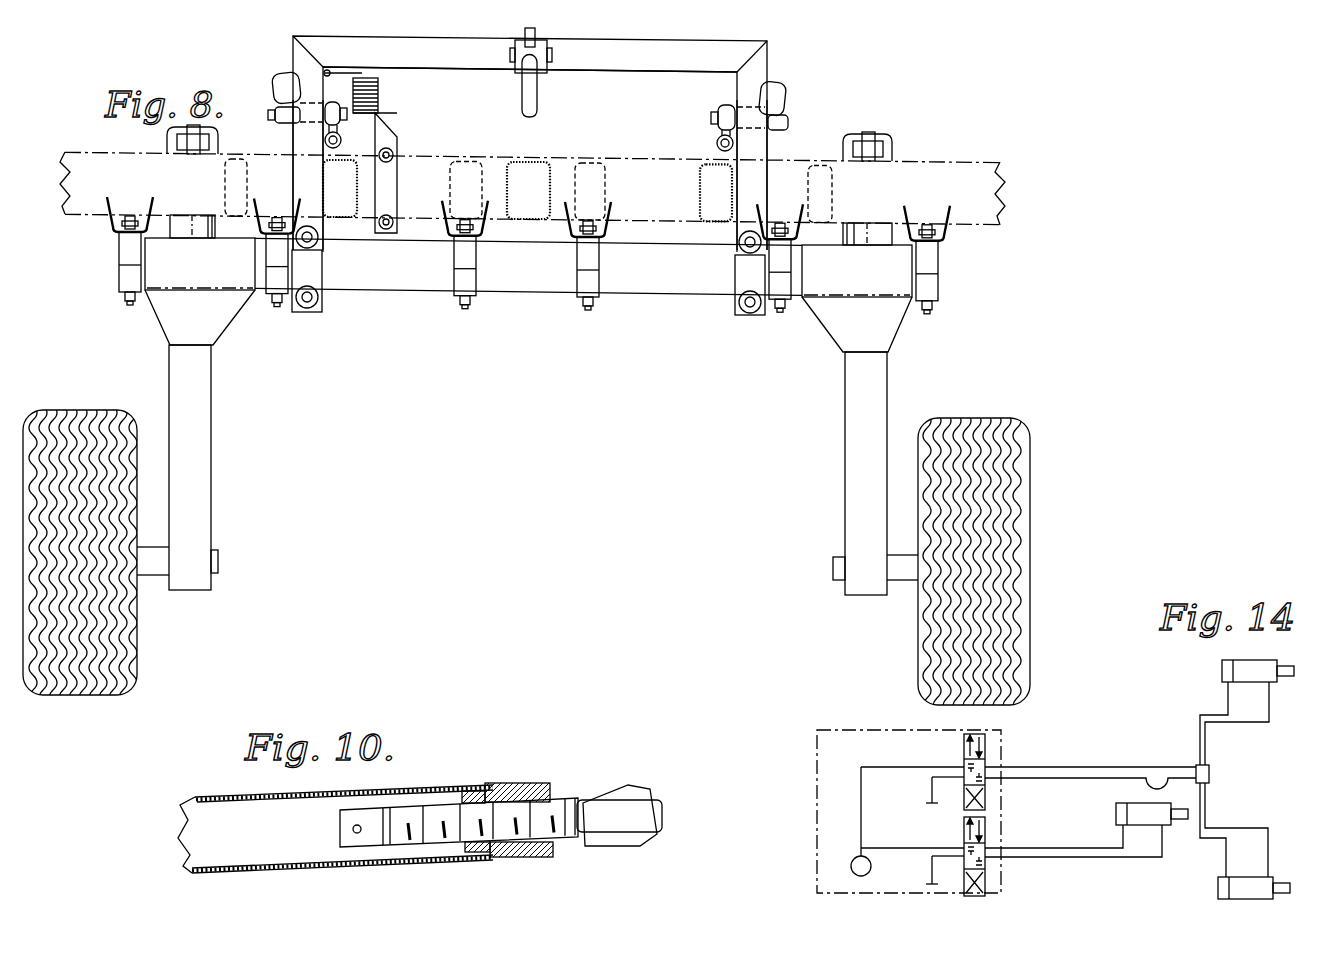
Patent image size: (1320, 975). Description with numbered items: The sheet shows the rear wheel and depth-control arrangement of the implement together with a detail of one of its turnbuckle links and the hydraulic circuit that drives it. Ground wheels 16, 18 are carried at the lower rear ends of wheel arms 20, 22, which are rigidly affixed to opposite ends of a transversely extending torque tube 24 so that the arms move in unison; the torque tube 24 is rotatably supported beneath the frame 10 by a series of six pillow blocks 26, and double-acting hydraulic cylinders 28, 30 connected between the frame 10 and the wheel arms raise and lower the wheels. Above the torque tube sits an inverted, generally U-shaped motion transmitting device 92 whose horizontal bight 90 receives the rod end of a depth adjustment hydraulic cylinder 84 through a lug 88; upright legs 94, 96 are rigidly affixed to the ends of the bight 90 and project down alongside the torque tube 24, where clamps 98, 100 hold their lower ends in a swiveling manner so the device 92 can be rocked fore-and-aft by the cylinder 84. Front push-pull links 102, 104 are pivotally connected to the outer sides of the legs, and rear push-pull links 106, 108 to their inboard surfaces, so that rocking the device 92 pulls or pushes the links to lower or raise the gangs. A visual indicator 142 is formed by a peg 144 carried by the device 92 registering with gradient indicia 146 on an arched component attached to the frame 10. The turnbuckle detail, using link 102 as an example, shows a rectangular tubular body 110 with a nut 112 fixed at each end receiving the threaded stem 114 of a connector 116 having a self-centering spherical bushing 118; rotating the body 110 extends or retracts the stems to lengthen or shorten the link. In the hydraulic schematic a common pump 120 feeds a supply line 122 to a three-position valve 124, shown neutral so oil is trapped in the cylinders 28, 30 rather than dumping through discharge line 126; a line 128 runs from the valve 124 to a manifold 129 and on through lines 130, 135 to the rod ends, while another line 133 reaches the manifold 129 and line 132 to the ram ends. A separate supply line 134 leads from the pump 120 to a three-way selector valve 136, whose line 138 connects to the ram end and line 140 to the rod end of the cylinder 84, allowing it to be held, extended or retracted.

In FIG. 8, the frame 10 is at (929, 148).
In FIG. 8, the wheel 16 is at (943, 665).
In FIG. 8, the wheel 18 is at (132, 652).
In FIG. 8, the wheel arm 20 is at (860, 540).
In FIG. 8, the wheel arm 22 is at (200, 457).
In FIG. 8, the torque tube 24 is at (632, 282).
In FIG. 8, the pillow block 26 is at (130, 280).
In FIG. 8, the hydraulic cylinder 28 is at (872, 232).
In FIG. 14, the hydraulic cylinder 28 is at (1272, 877).
In FIG. 8, the hydraulic cylinder 30 is at (532, 188).
In FIG. 14, the hydraulic cylinder 30 is at (1268, 683).
In FIG. 8, the hydraulic cylinder 84 is at (537, 99).
In FIG. 14, the hydraulic cylinder 84 is at (1122, 803).
In FIG. 8, the lug 88 is at (543, 33).
In FIG. 8, the bight 90 is at (711, 62).
In FIG. 8, the motion transmitting device 92 is at (790, 54).
In FIG. 8, the upright leg 94 is at (305, 145).
In FIG. 8, the upright leg 96 is at (752, 152).
In FIG. 8, the clamp 98 is at (308, 267).
In FIG. 8, the clamp 100 is at (747, 270).
In FIG. 8, the push-pull link 102 is at (282, 92).
In FIG. 10, the push-pull link 102 is at (416, 776).
In FIG. 8, the push-pull link 104 is at (784, 104).
In FIG. 8, the push-pull link 106 is at (338, 152).
In FIG. 8, the push-pull link 108 is at (720, 154).
In FIG. 10, the tubular body 110 is at (228, 797).
In FIG. 10, the nut 112 is at (520, 782).
In FIG. 10, the threaded stem 114 is at (512, 857).
In FIG. 10, the connector 116 is at (695, 830).
In FIG. 10, the spherical bushing 118 is at (628, 788).
In FIG. 14, the pump 120 is at (849, 872).
In FIG. 14, the supply line 122 is at (858, 818).
In FIG. 14, the three-position valve 124 is at (963, 758).
In FIG. 14, the discharge line 126 is at (931, 783).
In FIG. 14, the line 128 is at (1050, 766).
In FIG. 14, the manifold 129 is at (1211, 775).
In FIG. 14, the line 130 is at (1245, 722).
In FIG. 14, the line 132 is at (1212, 840).
In FIG. 14, the line 133 is at (1150, 775).
In FIG. 14, the supply line 134 is at (920, 850).
In FIG. 14, the line 135 is at (1245, 828).
In FIG. 14, the three-way selector valve 136 is at (988, 875).
In FIG. 14, the line 138 is at (1030, 848).
In FIG. 14, the line 140 is at (1100, 860).
In FIG. 8, the visual indicator 142 is at (400, 106).
In FIG. 8, the peg 144 is at (362, 71).
In FIG. 8, the gradient indicia 146 is at (378, 92).